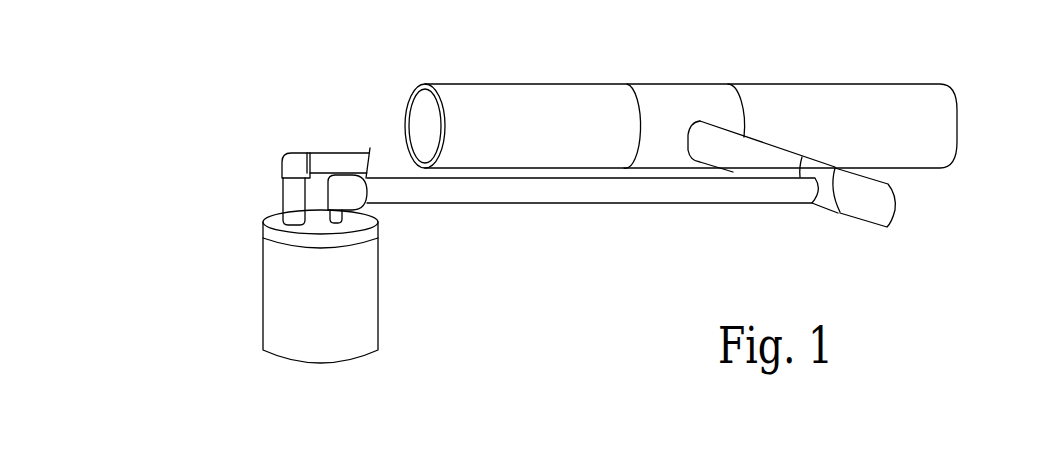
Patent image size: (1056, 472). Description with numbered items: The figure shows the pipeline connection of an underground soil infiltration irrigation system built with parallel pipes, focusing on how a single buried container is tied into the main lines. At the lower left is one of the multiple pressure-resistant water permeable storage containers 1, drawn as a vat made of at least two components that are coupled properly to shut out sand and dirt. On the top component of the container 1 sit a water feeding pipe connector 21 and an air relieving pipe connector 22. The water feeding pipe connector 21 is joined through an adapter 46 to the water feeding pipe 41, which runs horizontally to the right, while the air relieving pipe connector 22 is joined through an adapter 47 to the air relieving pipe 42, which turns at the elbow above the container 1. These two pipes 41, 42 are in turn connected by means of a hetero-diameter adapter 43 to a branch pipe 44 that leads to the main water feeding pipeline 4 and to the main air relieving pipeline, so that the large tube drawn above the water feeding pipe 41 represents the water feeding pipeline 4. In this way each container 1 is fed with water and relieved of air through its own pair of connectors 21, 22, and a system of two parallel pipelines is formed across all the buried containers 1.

The water permeable storage container 1 is at (371, 285).
The water feeding pipe connector 21 is at (332, 221).
The air relieving pipe connector 22 is at (292, 206).
The water feeding pipeline 4 is at (958, 113).
The water feeding pipe 41 is at (605, 195).
The air relieving pipe 42 is at (351, 152).
The hetero-diameter adapter 43 is at (733, 117).
The branch pipe 44 is at (889, 210).
The adapter 46 is at (352, 199).
The adapter 47 is at (298, 165).